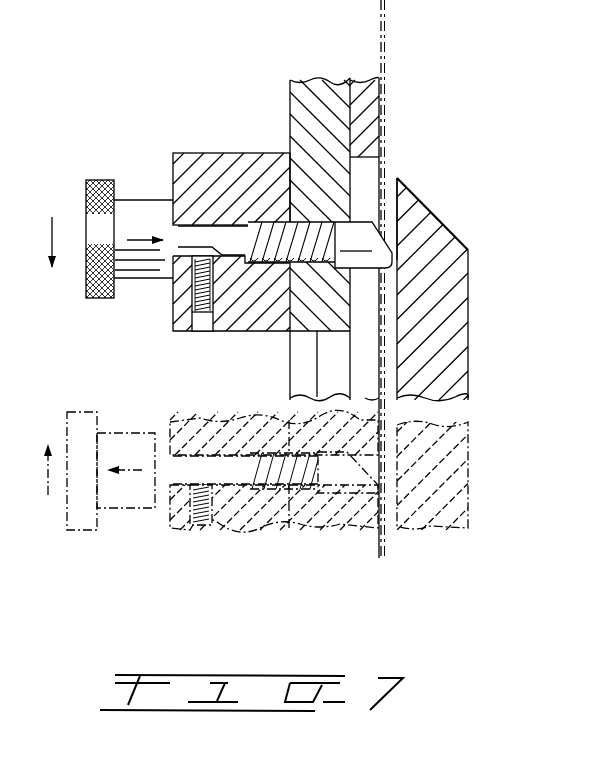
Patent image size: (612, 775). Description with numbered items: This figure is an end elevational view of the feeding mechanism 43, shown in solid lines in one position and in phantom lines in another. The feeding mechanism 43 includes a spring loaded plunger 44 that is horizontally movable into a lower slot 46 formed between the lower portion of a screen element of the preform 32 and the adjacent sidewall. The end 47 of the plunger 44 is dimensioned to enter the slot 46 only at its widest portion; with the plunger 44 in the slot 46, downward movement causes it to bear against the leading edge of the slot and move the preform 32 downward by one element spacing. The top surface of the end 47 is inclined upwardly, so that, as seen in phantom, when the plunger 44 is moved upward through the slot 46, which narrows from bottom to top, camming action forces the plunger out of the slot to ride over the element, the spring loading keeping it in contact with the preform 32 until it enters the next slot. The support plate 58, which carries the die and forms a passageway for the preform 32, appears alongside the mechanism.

The preform 32 is at (387, 42).
The feeding mechanism 43 is at (118, 340).
The spring loaded plunger 44 is at (107, 181).
The lower slot 46 is at (412, 205).
The end of plunger 47 is at (358, 232).
The support plate 58 is at (458, 318).